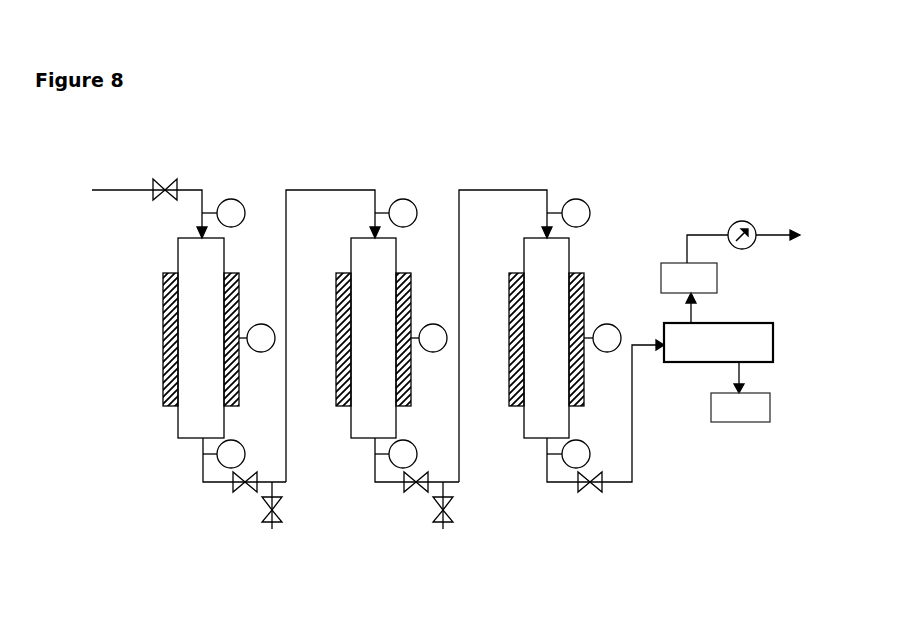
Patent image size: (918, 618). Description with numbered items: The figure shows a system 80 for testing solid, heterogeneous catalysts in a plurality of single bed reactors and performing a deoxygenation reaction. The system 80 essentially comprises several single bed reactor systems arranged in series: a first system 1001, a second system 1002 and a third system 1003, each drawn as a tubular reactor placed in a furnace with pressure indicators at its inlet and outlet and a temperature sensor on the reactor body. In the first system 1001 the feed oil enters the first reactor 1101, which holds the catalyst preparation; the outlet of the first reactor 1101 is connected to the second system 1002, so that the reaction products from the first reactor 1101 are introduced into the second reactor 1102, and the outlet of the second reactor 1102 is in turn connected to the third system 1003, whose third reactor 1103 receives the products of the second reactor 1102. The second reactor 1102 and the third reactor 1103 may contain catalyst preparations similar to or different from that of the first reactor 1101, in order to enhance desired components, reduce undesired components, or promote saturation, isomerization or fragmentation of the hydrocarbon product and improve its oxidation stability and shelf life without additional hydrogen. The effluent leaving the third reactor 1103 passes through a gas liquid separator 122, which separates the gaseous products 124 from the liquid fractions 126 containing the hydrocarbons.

The system 80 is at (700, 155).
The first system 1001 is at (218, 152).
The second system 1002 is at (366, 152).
The third system 1003 is at (532, 153).
The first reactor 1101 is at (187, 440).
The second reactor 1102 is at (359, 441).
The third reactor 1103 is at (533, 441).
The gas liquid separator 122 is at (718, 342).
The gaseous products 124 is at (689, 278).
The liquid fractions 126 is at (740, 407).